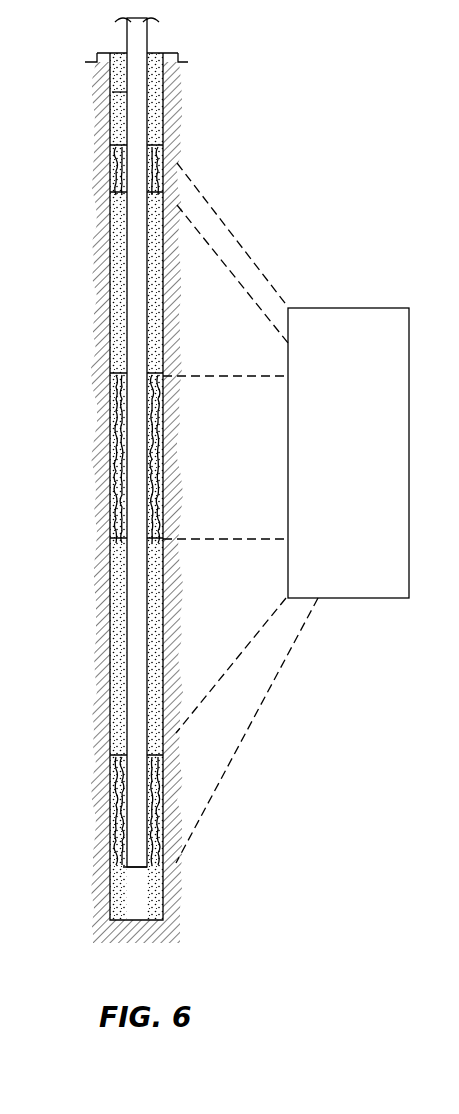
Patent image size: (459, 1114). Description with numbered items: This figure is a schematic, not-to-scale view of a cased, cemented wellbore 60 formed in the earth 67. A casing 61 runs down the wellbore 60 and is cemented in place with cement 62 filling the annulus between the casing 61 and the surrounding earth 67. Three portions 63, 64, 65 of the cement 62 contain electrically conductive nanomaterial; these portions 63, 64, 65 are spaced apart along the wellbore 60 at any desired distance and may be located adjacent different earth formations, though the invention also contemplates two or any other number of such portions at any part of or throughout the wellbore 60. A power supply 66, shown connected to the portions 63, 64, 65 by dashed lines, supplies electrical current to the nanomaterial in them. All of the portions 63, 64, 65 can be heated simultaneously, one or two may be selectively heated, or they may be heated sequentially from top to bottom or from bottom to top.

The wellbore 60 is at (163, 101).
The casing 61 is at (112, 92).
The cement 62 is at (118, 118).
The portion of the cement 63 is at (112, 172).
The portion of the cement 64 is at (112, 430).
The portion of the cement 65 is at (110, 792).
The power supply 66 is at (286, 513).
The earth 67 is at (155, 502).